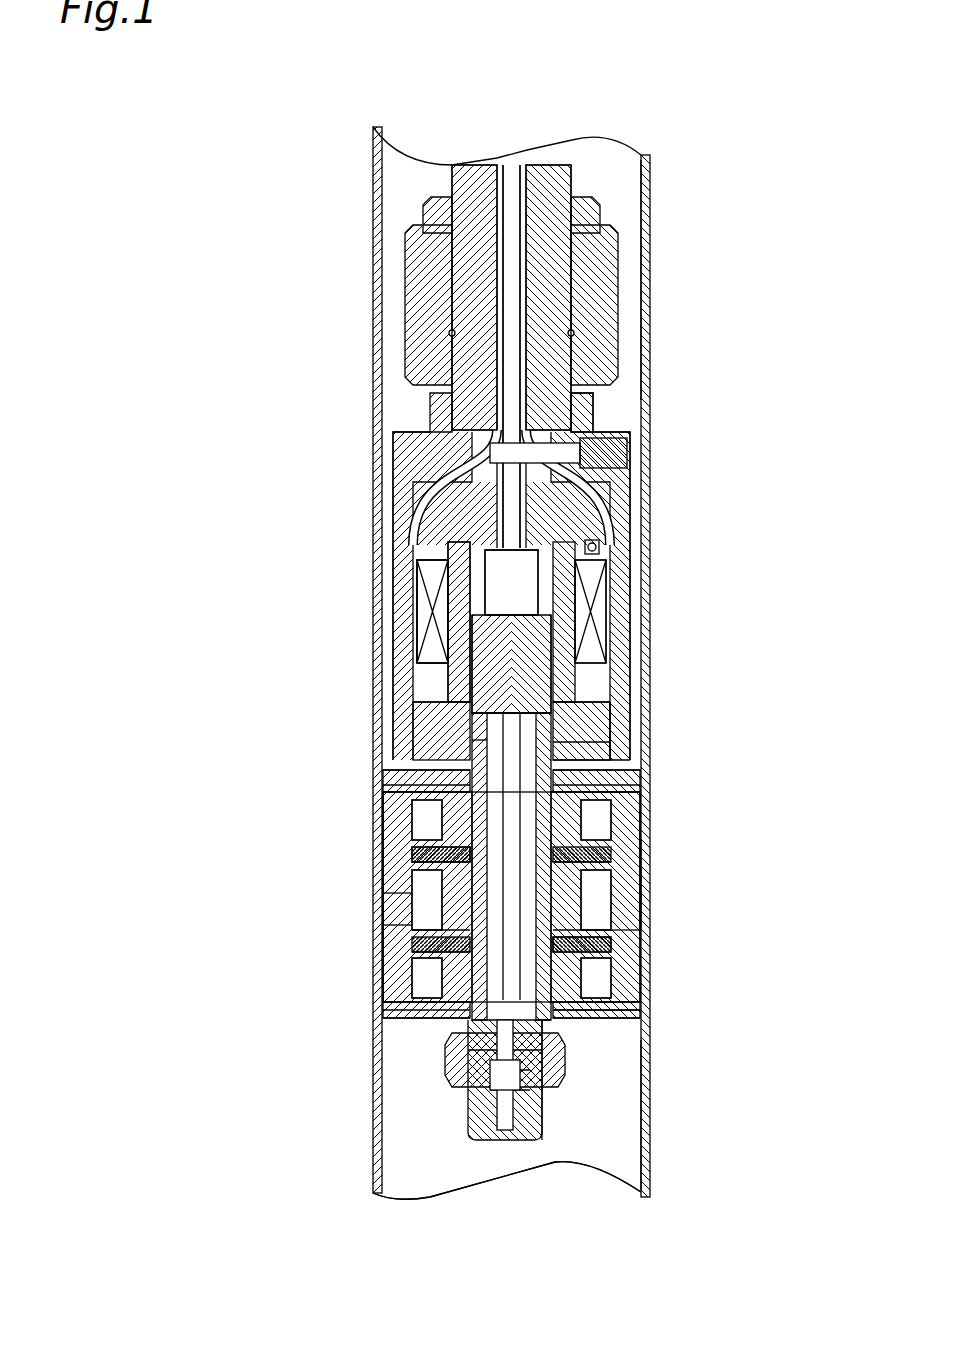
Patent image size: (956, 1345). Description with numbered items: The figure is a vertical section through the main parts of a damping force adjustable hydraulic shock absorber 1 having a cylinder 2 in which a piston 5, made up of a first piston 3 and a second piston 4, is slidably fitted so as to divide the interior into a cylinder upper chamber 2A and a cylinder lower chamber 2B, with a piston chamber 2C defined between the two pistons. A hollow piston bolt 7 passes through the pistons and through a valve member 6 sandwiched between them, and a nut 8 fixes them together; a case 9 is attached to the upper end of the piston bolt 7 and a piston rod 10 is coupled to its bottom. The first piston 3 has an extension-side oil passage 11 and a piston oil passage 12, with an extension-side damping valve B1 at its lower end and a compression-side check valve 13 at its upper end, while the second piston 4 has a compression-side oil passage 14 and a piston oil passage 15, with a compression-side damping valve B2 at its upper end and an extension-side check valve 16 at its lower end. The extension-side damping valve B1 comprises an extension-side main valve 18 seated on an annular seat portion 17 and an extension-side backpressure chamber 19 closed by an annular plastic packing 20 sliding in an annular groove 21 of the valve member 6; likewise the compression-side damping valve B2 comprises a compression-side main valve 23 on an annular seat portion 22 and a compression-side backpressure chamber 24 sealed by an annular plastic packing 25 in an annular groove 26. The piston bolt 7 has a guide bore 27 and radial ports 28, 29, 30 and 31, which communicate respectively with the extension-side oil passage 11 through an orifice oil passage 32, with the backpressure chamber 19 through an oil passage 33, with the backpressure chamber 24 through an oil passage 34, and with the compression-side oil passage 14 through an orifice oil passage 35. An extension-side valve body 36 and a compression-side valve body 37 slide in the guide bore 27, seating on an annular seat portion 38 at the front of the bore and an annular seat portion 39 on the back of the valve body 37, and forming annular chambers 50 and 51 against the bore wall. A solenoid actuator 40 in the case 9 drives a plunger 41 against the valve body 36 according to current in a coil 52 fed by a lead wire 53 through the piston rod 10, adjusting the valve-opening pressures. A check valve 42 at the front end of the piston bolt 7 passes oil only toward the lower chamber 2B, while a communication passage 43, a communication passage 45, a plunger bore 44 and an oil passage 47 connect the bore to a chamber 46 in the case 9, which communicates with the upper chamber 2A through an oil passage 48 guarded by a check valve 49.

The damping force adjustable hydraulic shock absorber 1 is at (716, 195).
The cylinder 2 is at (651, 178).
The cylinder upper chamber 2A is at (632, 296).
The cylinder lower chamber 2B is at (623, 1153).
The piston chamber 2C is at (636, 882).
The first piston 3 is at (592, 842).
The second piston 4 is at (600, 926).
The piston 5 is at (740, 812).
The valve member 6 is at (440, 905).
The hollow piston bolt 7 is at (565, 650).
The nut 8 is at (572, 1100).
The case 9 is at (630, 483).
The piston rod 10 is at (553, 150).
The extension-side oil passage 11 is at (386, 812).
The piston oil passage 12 is at (455, 792).
The compression-side check valve 13 is at (478, 750).
The compression-side oil passage 14 is at (598, 1012).
The piston oil passage 15 is at (608, 1002).
The extension-side check valve 16 is at (620, 1012).
The annular seat portion 17 is at (430, 826).
The extension-side main valve 18 is at (440, 862).
The extension-side backpressure chamber 19 is at (425, 925).
The annular plastic packing 20 is at (600, 832).
The annular groove 21 is at (600, 872).
The annular seat portion 22 is at (613, 992).
The compression-side main valve 23 is at (615, 952).
The compression-side backpressure chamber 24 is at (600, 906).
The annular plastic packing 25 is at (440, 975).
The annular groove 26 is at (440, 935).
The guide bore 27 is at (482, 700).
The port 28 is at (470, 728).
The port 29 is at (445, 990).
The port 30 is at (398, 1018).
The port 31 is at (470, 1050).
The orifice oil passage 32 is at (468, 772).
The oil passage 33 is at (398, 893).
The oil passage 34 is at (452, 1008).
The orifice oil passage 35 is at (478, 1030).
The extension-side valve body 36 is at (620, 718).
The compression-side valve body 37 is at (605, 792).
The annular seat portion 38 is at (580, 1022).
The annular seat portion 39 is at (612, 768).
The solenoid actuator 40 is at (629, 548).
The plunger 41 is at (455, 650).
The check valve 42 is at (466, 1100).
The communication passage 43 is at (490, 1070).
The plunger bore 44 is at (462, 685).
The communication passage 45 is at (585, 700).
The chamber 46 is at (600, 527).
The oil passage 47 is at (520, 578).
The oil passage 48 is at (596, 400).
The check valve 49 is at (610, 440).
The annular chamber 50 is at (600, 742).
The annular chamber 51 is at (498, 1090).
The coil 52 is at (418, 612).
The lead wire 53 is at (511, 162).
The extension-side damping valve B1 is at (410, 853).
The compression-side damping valve B2 is at (614, 965).